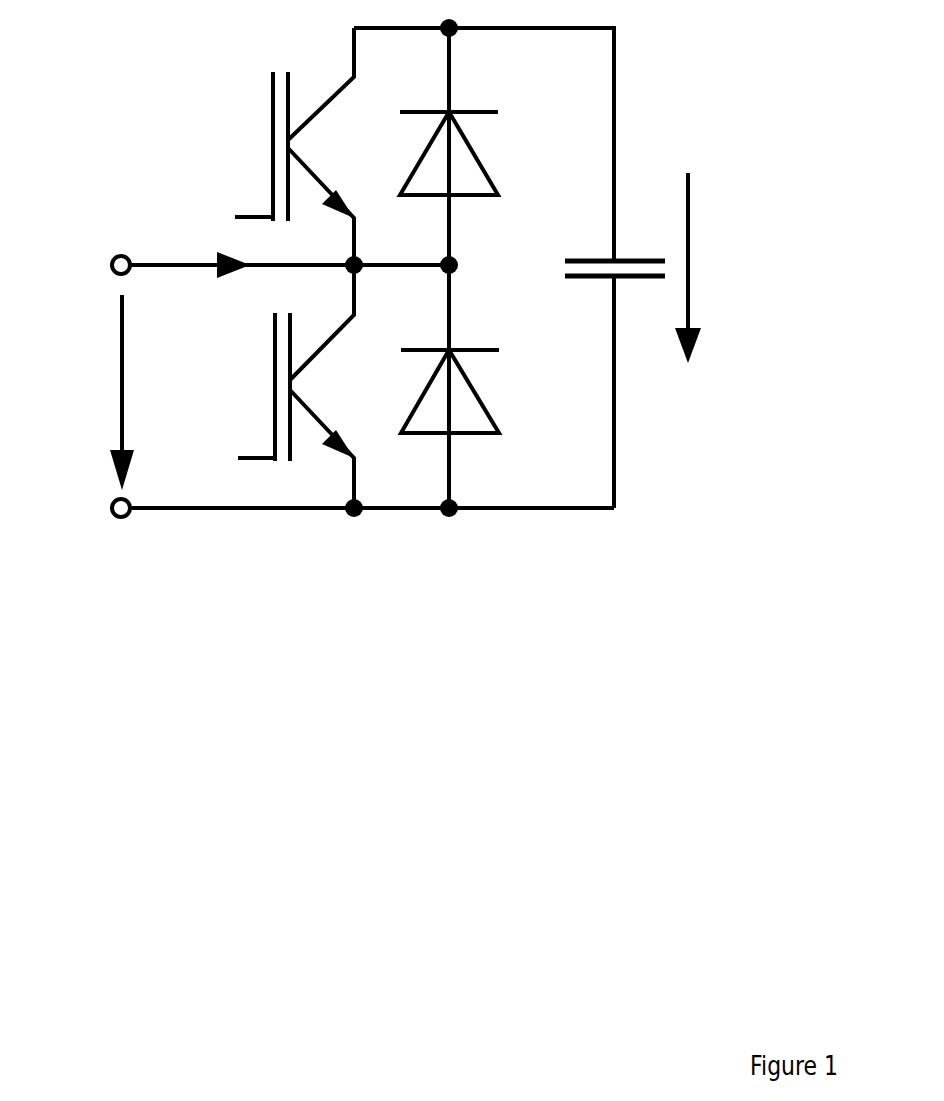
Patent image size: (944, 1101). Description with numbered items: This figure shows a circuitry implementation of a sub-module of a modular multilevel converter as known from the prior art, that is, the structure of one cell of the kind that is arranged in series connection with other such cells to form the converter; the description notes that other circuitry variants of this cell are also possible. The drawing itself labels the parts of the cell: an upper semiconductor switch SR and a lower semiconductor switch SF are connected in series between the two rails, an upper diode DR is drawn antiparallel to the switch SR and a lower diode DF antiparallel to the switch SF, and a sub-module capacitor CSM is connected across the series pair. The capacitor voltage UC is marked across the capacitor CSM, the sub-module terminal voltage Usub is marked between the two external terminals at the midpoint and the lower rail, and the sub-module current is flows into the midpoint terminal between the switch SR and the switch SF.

The first semiconductor switch (IGBT) of the submodule SR is at (283, 146).
The second semiconductor switch (IGBT) of the submodule SF is at (286, 386).
The freewheeling diode antiparallel to switch SR DR is at (475, 146).
The freewheeling diode antiparallel to switch SF DF is at (476, 386).
The submodule capacitor CSM is at (599, 237).
The capacitor voltage UC is at (711, 268).
The submodule terminal voltage Usub is at (84, 392).
The submodule current is is at (210, 245).